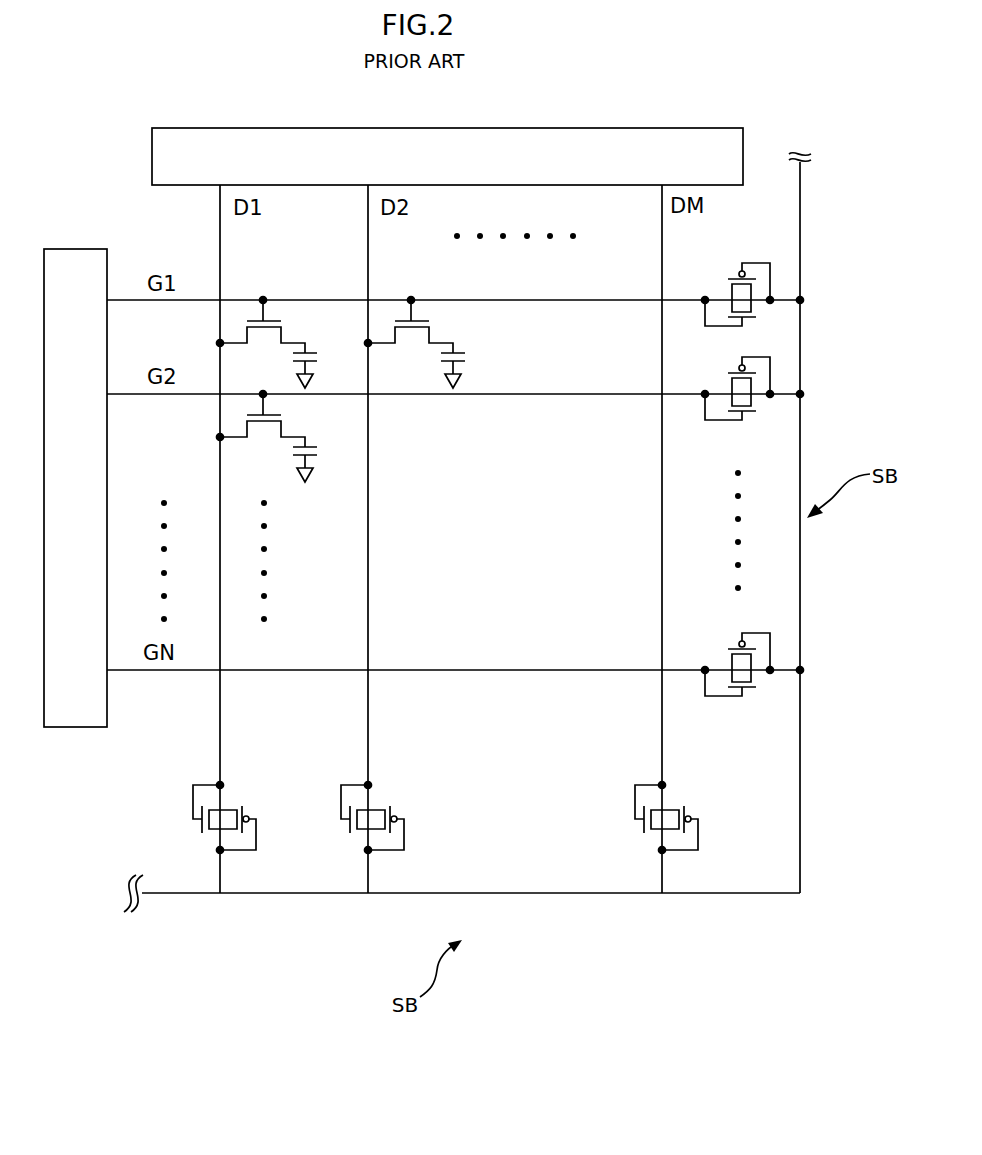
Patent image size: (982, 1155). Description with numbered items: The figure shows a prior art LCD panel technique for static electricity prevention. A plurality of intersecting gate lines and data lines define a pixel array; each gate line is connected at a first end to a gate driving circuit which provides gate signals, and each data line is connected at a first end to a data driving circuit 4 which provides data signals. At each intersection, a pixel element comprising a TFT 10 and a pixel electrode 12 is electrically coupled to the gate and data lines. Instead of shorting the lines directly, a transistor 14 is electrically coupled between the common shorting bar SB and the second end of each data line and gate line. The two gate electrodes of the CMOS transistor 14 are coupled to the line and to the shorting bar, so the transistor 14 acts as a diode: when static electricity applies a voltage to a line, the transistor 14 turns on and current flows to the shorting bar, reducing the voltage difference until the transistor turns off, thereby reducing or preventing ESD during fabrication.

The data driving circuit 4 is at (598, 127).
The pixel electrode 12 is at (68, 249).
The TFT 10 is at (435, 315).
The transistor 14 is at (762, 263).